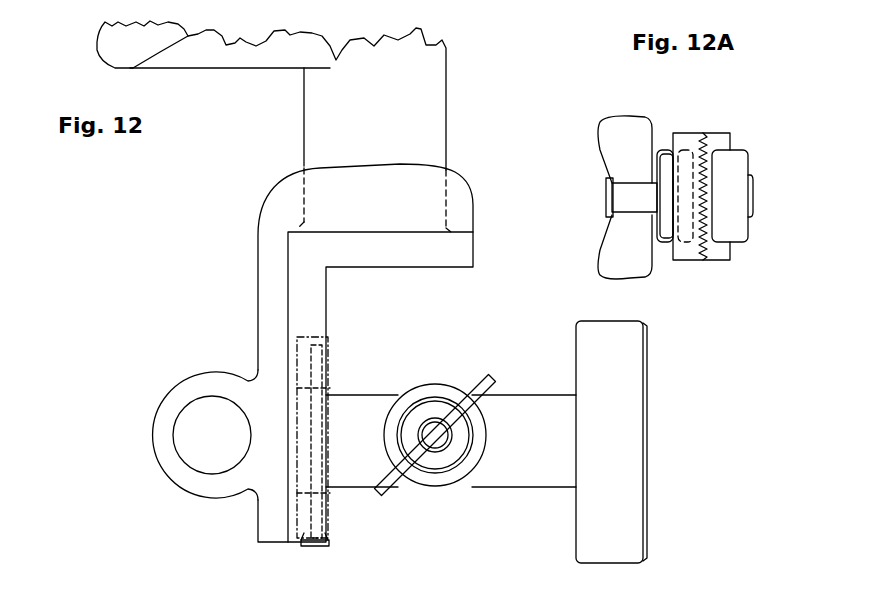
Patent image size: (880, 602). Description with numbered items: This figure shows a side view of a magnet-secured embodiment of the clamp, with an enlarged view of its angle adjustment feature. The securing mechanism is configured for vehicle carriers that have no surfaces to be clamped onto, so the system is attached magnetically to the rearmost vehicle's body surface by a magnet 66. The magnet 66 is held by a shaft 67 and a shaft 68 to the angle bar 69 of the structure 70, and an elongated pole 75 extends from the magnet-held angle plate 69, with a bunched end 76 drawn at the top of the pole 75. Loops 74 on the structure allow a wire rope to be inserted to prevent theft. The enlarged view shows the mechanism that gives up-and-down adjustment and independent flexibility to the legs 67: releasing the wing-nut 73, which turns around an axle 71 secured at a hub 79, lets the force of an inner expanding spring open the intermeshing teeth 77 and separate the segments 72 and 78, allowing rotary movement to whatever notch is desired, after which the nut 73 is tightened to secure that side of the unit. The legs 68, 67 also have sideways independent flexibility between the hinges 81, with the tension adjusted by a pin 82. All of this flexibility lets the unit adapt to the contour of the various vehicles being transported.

In FIG. 12, the magnet 66 is at (630, 437).
In FIG. 12, the shaft 67 is at (516, 400).
In FIG. 12A, the shaft 67 is at (738, 230).
In FIG. 12, the shaft 68 is at (340, 405).
In FIG. 12A, the shaft 68 is at (668, 148).
In FIG. 12, the angle bar 69 is at (474, 254).
In FIG. 12, the structure 70 is at (476, 200).
In FIG. 12, the axle 71 is at (427, 425).
In FIG. 12A, the axle 71 is at (630, 202).
In FIG. 12, the segment 72 is at (442, 382).
In FIG. 12A, the segment 72 is at (687, 133).
In FIG. 12, the wing-nut 73 is at (480, 378).
In FIG. 12A, the wing-nut 73 is at (610, 127).
In FIG. 12, the loop 74 is at (163, 457).
In FIG. 12, the elongated pole 75 is at (425, 88).
In FIG. 12, the fabric bunch 76 is at (112, 42).
In FIG. 12A, the intermeshing teeth 77 is at (703, 133).
In FIG. 12A, the segment 78 is at (717, 131).
In FIG. 12A, the hub 79 is at (753, 195).
In FIG. 12, the hinge 81 is at (333, 347).
In FIG. 12, the pin 82 is at (311, 553).